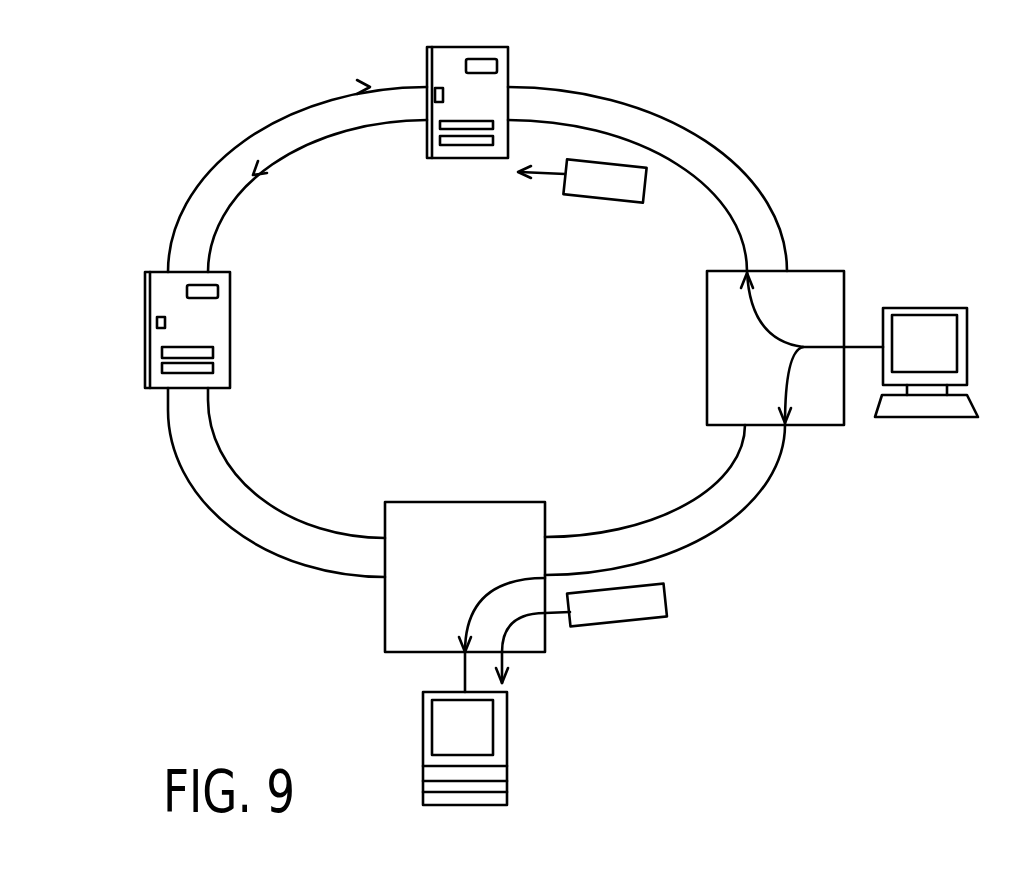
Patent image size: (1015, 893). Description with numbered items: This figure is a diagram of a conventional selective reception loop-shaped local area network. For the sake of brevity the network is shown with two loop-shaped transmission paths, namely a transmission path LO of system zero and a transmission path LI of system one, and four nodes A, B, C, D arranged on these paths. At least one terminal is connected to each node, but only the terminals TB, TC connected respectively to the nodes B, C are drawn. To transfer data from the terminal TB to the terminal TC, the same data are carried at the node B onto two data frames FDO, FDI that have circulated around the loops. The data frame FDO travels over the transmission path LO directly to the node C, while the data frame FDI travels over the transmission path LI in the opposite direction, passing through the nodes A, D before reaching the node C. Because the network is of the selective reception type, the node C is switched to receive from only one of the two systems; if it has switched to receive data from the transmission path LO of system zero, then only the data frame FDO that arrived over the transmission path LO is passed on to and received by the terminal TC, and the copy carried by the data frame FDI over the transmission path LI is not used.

The node A is at (460, 158).
The node B is at (822, 268).
The node C is at (498, 502).
The node D is at (146, 316).
The transmission path of system 0 LO is at (652, 110).
The transmission path of system 1 LI is at (668, 157).
The data frame FDI is at (587, 197).
The data frame FDO is at (640, 622).
The terminal TB is at (907, 420).
The terminal TC is at (507, 740).